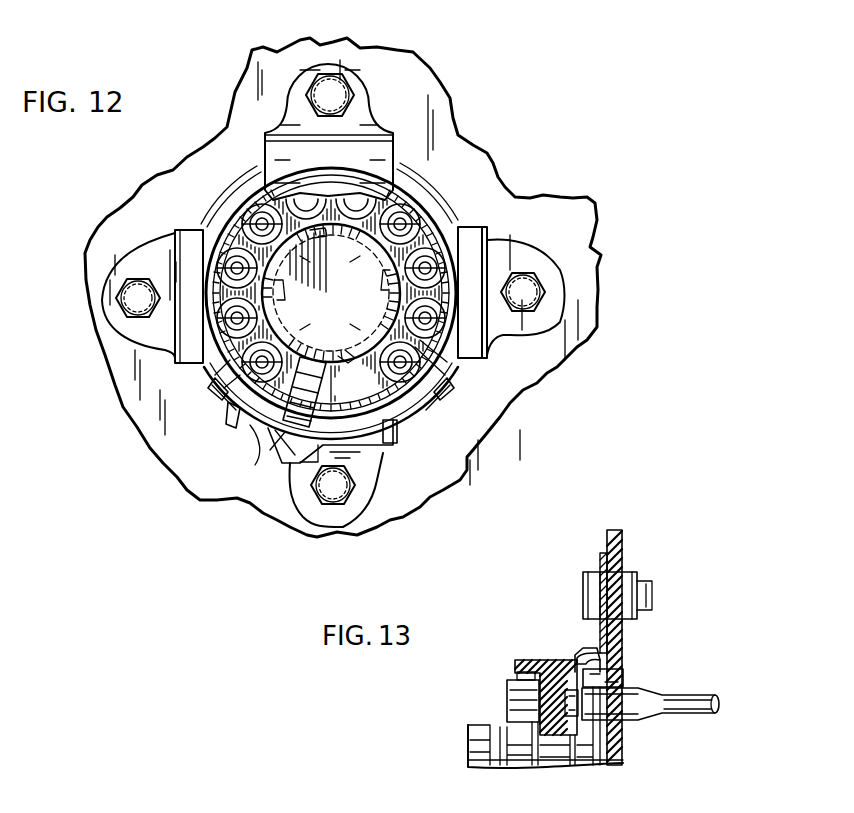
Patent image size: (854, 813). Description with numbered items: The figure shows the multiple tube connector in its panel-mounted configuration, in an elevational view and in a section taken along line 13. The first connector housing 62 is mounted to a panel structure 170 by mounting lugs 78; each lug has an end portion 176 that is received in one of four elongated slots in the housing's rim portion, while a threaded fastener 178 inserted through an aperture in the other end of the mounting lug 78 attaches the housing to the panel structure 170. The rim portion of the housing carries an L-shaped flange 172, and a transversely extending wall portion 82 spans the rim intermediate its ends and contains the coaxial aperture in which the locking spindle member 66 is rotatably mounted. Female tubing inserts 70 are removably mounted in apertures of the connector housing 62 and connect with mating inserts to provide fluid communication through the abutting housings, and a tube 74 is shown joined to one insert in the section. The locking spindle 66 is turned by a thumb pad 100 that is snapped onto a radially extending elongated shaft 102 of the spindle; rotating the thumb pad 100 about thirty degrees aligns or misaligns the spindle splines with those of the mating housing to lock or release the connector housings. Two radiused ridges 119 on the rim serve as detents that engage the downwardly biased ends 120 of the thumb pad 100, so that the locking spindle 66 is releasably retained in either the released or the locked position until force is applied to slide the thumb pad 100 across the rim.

In FIG. 12, the section line 13— 13 is at (345, 268).
In FIG. 12, the first connector housing 62 is at (447, 382).
In FIG. 13, the first connector housing 62 is at (517, 660).
In FIG. 12, the locking spindle member 66 is at (312, 325).
In FIG. 13, the locking spindle member 66 is at (475, 747).
In FIG. 12, the female tubing insert 70 is at (413, 223).
In FIG. 13, the female tubing insert 70 is at (518, 702).
In FIG. 13, the tube 74 is at (678, 703).
In FIG. 12, the mounting lug 78 is at (365, 100).
In FIG. 13, the mounting lug 78 is at (598, 637).
In FIG. 12, the wall portion 82 is at (276, 178).
In FIG. 12, the thumb pad 100 is at (293, 442).
In FIG. 12, the elongated shaft 102 is at (313, 378).
In FIG. 12, the radiused ridges 119 is at (238, 400).
In FIG. 12, the downwardly biased ends 120 is at (240, 420).
In FIG. 12, the panel structure 170 is at (455, 157).
In FIG. 13, the panel structure 170 is at (613, 547).
In FIG. 13, the L-shaped flange 172 is at (623, 677).
In FIG. 13, the end portion 176 is at (585, 657).
In FIG. 12, the threaded fastener 178 is at (130, 297).
In FIG. 13, the threaded fastener 178 is at (583, 588).